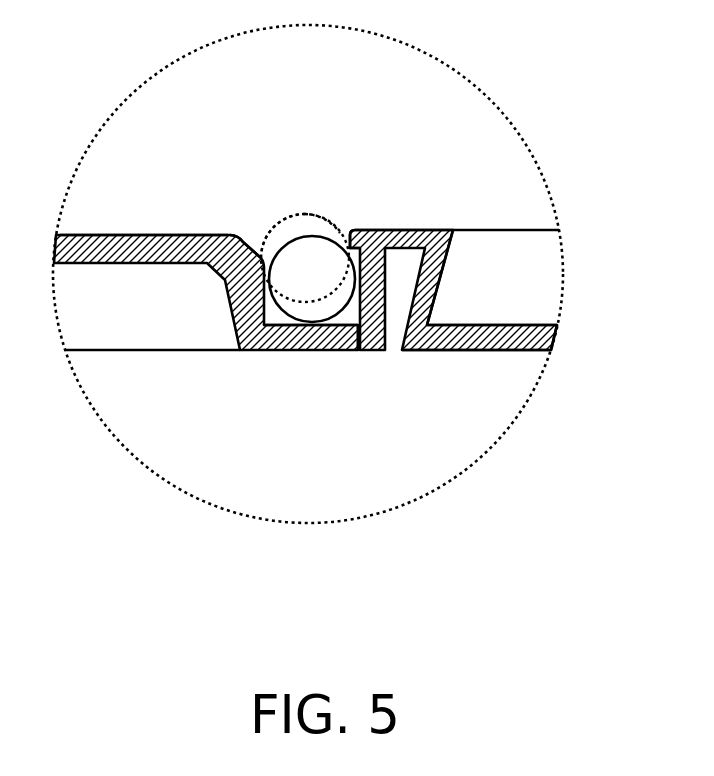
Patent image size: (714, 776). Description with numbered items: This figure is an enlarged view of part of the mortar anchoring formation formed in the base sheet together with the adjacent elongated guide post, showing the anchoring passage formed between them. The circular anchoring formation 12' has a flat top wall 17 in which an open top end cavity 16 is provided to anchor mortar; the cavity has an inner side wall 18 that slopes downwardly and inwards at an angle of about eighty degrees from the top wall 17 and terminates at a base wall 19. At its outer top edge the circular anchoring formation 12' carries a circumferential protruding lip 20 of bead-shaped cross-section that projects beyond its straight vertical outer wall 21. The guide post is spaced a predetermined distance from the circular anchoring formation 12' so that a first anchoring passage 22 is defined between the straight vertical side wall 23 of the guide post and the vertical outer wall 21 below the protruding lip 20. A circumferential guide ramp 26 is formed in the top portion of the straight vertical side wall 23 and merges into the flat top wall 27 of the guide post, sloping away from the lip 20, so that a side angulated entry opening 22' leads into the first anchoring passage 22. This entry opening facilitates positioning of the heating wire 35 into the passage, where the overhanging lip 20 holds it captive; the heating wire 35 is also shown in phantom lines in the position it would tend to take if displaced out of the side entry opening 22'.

The circular anchoring formation 12' is at (454, 242).
The open top end cavity 16 is at (483, 282).
The flat top wall 17 is at (387, 230).
The inner side wall 18 is at (452, 272).
The base wall 19 is at (542, 325).
The lip 20 is at (363, 230).
The vertical outer wall 21 is at (358, 307).
The first anchoring passage 22 is at (312, 216).
The side angulated entry opening 22' is at (285, 208).
The straight vertical side wall 23 is at (265, 307).
The circumferential guide ramp 26 is at (242, 240).
The flat top wall 27 is at (92, 235).
The heating wire 35 is at (268, 243).